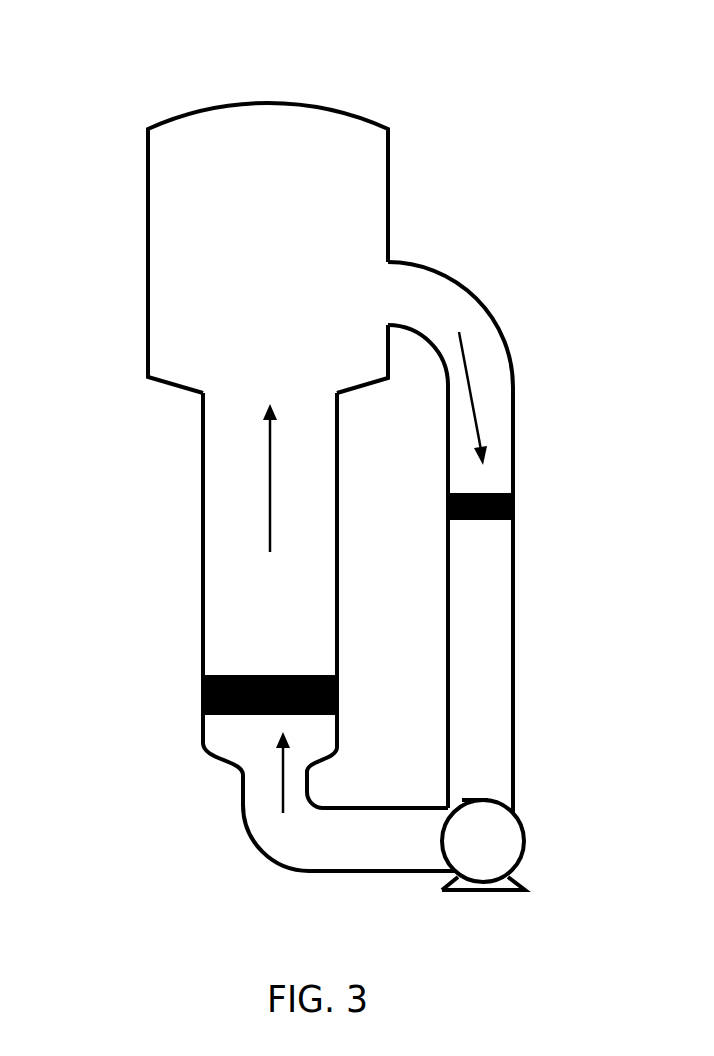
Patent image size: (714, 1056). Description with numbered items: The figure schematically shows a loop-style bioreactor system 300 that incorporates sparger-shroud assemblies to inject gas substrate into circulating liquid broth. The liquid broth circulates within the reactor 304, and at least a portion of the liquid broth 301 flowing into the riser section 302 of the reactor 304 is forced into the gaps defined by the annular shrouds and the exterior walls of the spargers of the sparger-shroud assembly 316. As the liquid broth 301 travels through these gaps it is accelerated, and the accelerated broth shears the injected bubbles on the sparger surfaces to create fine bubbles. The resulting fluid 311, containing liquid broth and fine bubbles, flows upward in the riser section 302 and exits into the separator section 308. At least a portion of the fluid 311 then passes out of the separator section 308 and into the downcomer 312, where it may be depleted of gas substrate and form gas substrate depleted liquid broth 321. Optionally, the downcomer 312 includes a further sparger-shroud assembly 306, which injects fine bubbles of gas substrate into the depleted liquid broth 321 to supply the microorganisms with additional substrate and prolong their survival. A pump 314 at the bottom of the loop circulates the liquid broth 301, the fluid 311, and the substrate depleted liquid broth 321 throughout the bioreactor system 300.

The loop-style bioreactor system 300 is at (450, 72).
The reactor 304 is at (142, 238).
The separator section 308 is at (302, 240).
The downcomer 312 is at (433, 302).
The gas substrate depleted liquid broth 321 is at (483, 383).
The sparger-shroud assembly 306 is at (497, 487).
The riser section 302 is at (255, 588).
The fluid 311 is at (260, 485).
The sparger-shroud assembly 316 is at (228, 672).
The liquid broth 301 is at (275, 787).
The pump 314 is at (532, 815).